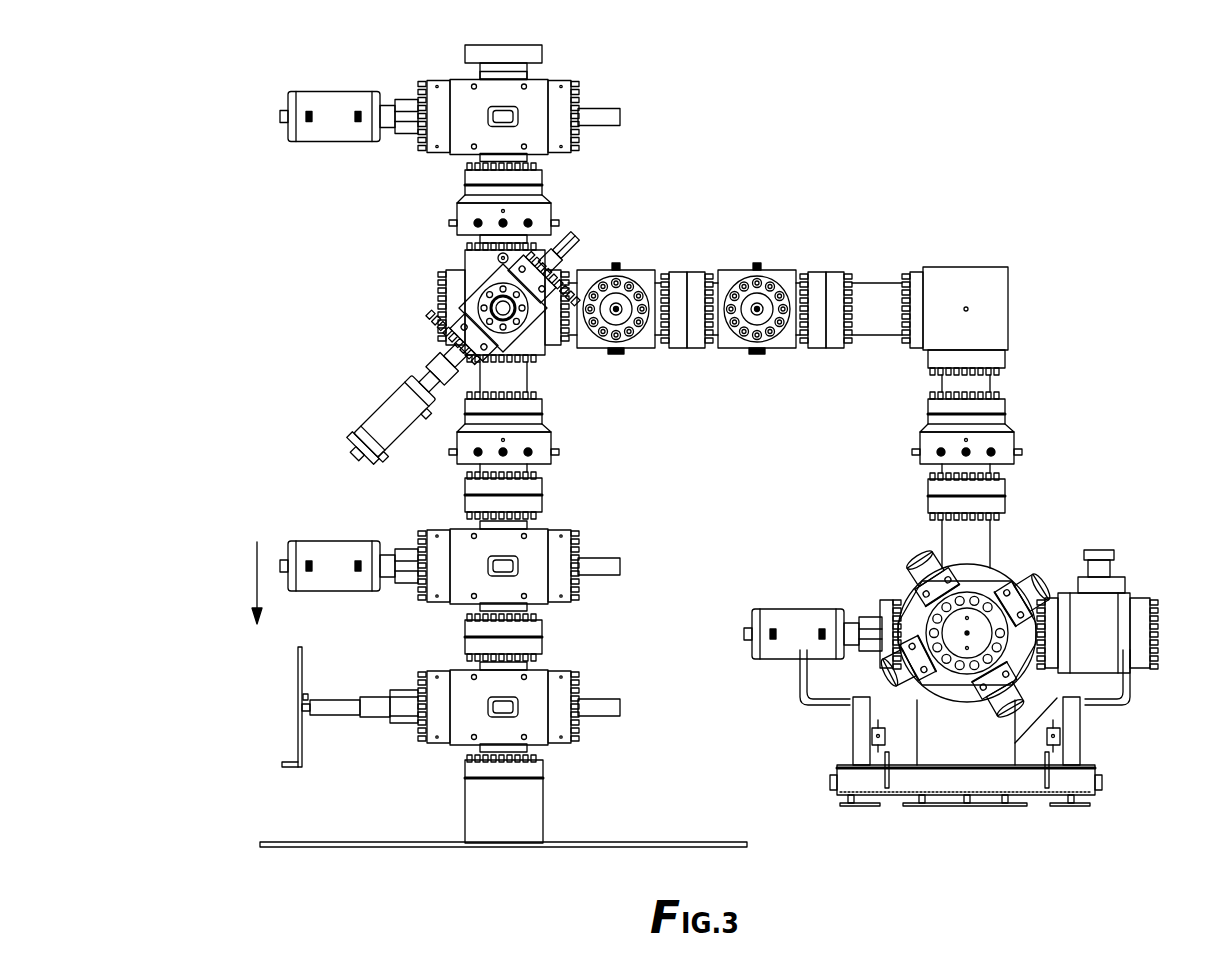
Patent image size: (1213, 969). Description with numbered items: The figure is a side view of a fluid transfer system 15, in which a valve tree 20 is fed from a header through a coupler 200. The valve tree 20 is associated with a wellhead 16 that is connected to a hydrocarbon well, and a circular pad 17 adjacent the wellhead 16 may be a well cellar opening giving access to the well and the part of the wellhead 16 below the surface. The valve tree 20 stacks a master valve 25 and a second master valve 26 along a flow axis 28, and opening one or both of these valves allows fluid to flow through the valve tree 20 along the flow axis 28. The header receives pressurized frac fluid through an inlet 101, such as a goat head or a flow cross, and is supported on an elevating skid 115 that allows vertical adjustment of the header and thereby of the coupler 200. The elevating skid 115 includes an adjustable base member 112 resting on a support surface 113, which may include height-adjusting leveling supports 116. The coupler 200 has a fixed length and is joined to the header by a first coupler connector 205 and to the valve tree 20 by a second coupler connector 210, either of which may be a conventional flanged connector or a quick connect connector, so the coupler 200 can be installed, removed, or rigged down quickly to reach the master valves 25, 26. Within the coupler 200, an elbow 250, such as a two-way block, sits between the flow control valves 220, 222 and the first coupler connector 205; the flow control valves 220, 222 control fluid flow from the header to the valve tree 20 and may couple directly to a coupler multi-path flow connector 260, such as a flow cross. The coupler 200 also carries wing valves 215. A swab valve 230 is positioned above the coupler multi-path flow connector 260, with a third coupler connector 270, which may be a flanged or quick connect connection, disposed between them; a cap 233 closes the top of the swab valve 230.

The fluid transfer system 15 is at (978, 156).
The wellhead 16 is at (543, 800).
The circular pad 17 is at (657, 847).
The valve tree 20 is at (575, 648).
The master valve 25 is at (614, 683).
The second master valve 26 is at (615, 538).
The flow axis 28 is at (257, 580).
The inlet 101 is at (1013, 551).
The adjustable base member 112 is at (1062, 733).
The support surface 113 is at (877, 765).
The elevating skid 115 is at (910, 805).
The leveling support 116 is at (1080, 804).
The coupler 200 is at (711, 233).
The first coupler connector 205 is at (1012, 438).
The second coupler connector 210 is at (547, 434).
The wing valve 215 is at (460, 297).
The flow control valve 220 is at (781, 268).
The flow control valve 222 is at (628, 268).
The swab valve 230 is at (550, 88).
The top cap 233 is at (477, 45).
The elbow 250 is at (1008, 290).
The coupler multi-path flow connector 260 is at (440, 273).
The third coupler connector 270 is at (550, 212).